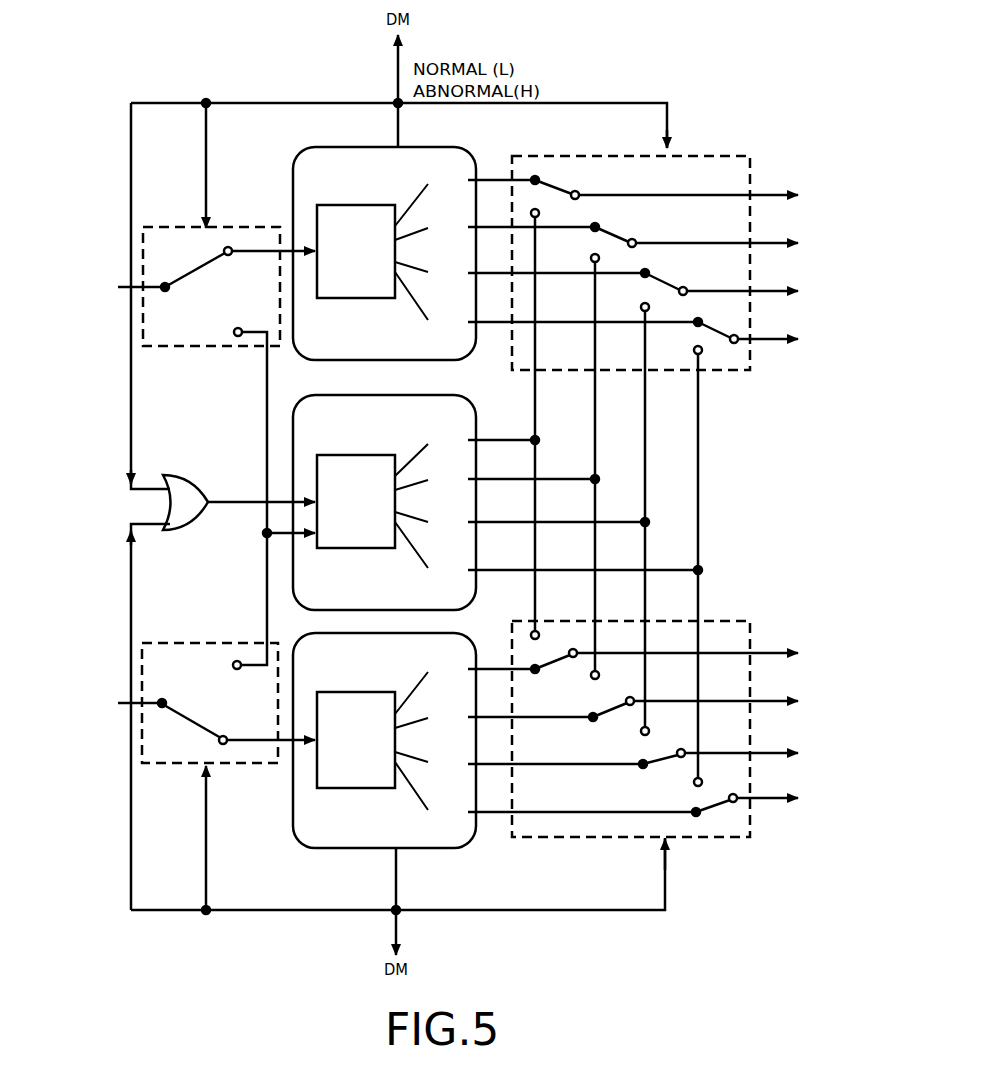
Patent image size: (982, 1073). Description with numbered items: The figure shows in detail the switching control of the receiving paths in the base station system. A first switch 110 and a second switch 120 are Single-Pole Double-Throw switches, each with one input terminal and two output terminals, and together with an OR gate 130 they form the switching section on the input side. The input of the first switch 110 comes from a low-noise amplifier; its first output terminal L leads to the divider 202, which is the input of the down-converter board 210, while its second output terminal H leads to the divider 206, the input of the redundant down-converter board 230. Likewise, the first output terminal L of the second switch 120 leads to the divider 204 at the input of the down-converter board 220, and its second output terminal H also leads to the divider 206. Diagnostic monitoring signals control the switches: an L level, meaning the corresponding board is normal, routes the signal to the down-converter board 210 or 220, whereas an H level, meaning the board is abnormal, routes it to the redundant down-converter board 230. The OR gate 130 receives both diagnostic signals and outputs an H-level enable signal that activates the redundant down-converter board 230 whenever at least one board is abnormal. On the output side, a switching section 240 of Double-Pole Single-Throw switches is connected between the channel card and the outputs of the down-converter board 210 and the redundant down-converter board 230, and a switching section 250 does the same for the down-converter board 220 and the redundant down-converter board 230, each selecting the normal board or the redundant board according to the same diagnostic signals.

The first switch 110 is at (233, 227).
The second switch 120 is at (158, 643).
The OR gate 130 is at (183, 477).
The down-converter board 210 is at (495, 238).
The down-converter board 220 is at (494, 728).
The redundant down-converter board 230 is at (497, 486).
The switching section 240 is at (722, 152).
The switching section 250 is at (720, 621).
The divider 202 is at (356, 251).
The divider 204 is at (356, 740).
The divider 206 is at (356, 501).